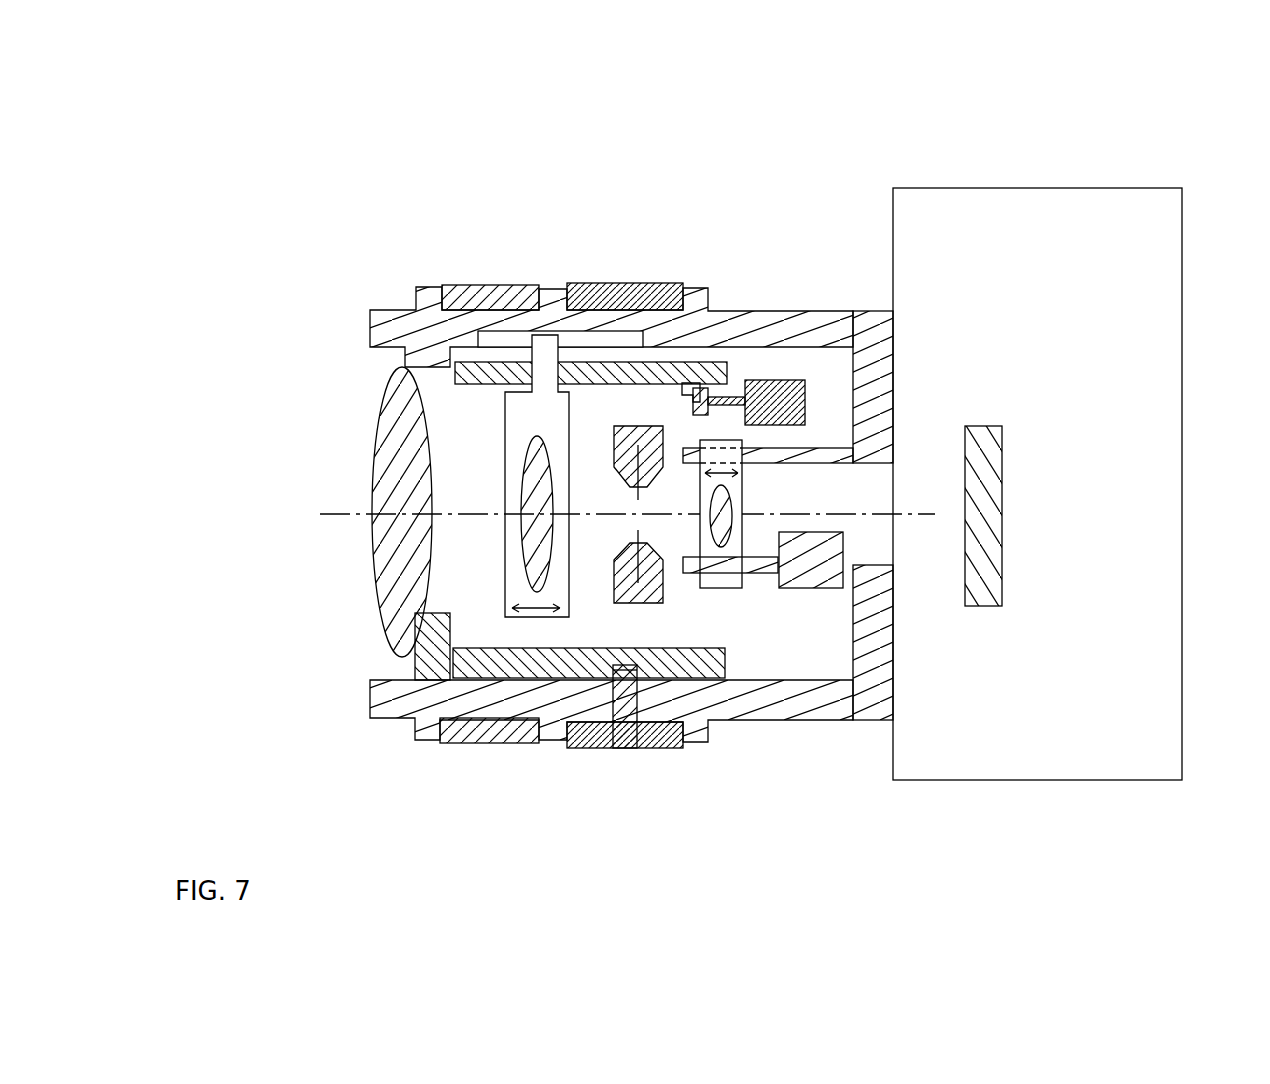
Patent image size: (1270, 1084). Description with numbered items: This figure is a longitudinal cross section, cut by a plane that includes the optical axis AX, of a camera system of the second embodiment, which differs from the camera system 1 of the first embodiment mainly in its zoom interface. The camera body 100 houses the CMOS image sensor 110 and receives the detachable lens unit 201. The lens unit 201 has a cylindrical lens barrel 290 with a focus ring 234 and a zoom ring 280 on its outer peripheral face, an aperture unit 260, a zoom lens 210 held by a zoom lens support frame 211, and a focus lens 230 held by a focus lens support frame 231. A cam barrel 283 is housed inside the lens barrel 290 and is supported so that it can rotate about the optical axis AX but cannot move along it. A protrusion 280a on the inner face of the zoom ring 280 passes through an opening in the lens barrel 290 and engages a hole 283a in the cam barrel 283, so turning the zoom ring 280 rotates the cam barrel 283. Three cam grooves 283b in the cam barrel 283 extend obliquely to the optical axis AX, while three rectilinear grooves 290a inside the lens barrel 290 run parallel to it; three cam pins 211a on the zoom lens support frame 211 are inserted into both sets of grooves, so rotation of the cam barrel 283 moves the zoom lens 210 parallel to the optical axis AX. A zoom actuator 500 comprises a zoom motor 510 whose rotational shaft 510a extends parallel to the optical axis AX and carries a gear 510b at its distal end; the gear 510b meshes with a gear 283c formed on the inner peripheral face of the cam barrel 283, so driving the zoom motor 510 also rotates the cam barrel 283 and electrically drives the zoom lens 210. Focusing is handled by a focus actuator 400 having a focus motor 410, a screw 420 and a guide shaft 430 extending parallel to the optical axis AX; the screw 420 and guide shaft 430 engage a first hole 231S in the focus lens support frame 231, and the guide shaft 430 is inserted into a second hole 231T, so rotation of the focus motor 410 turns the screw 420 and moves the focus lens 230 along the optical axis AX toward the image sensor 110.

The camera system 1 is at (403, 172).
The camera body 100 is at (935, 183).
The CMOS image sensor 110 is at (986, 470).
The lens unit 201 is at (287, 255).
The zoom lens 210 is at (530, 577).
The zoom lens support frame 211 is at (507, 612).
The cam pins 211a is at (552, 332).
The focus lens 230 is at (713, 503).
The focus lens support frame 231 is at (760, 570).
The second hole 231T is at (745, 467).
The first hole 231S is at (692, 575).
The focus ring 234 is at (455, 290).
The aperture unit 260 is at (614, 590).
The zoom ring 280 is at (612, 285).
The protrusion 280a is at (612, 697).
The cam barrel 283 is at (465, 380).
The hole 283a is at (640, 668).
The cam grooves 283b is at (527, 360).
The gear 283c is at (684, 388).
The lens barrel 290 is at (395, 325).
The rectilinear grooves 290a is at (433, 365).
The focus actuator 400 is at (863, 802).
The focus motor 410 is at (817, 588).
The screw 420 is at (777, 565).
The guide shaft 430 is at (822, 447).
The zoom actuator 500 is at (878, 190).
The zoom motor 510 is at (788, 380).
The rotational shaft 510a is at (735, 397).
The gear 510b is at (713, 388).
The optical axis AX is at (605, 511).